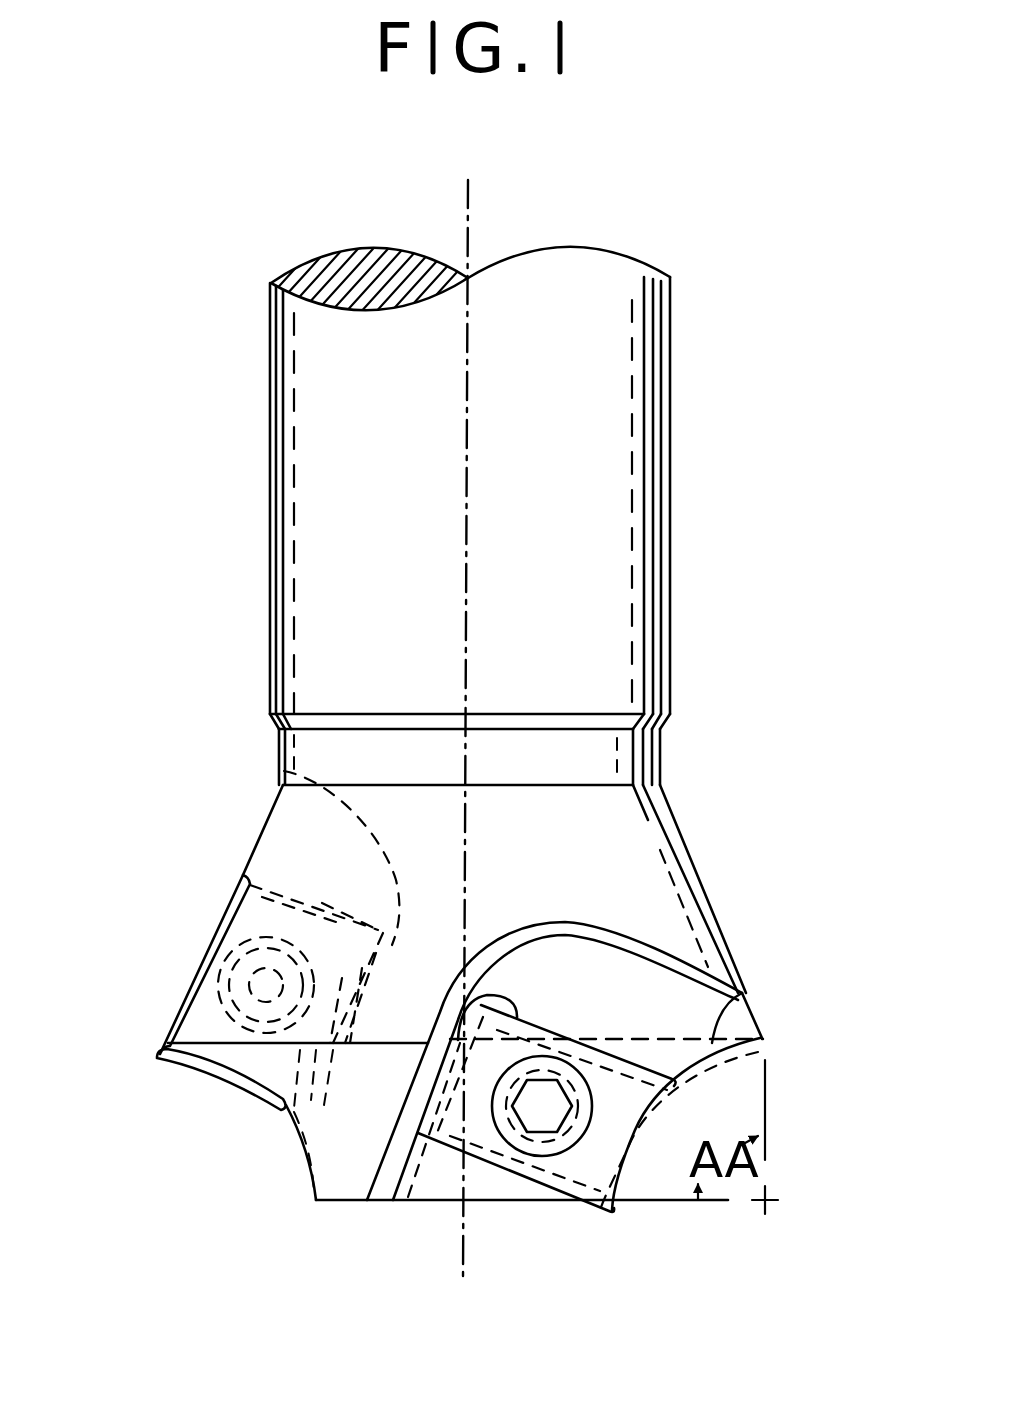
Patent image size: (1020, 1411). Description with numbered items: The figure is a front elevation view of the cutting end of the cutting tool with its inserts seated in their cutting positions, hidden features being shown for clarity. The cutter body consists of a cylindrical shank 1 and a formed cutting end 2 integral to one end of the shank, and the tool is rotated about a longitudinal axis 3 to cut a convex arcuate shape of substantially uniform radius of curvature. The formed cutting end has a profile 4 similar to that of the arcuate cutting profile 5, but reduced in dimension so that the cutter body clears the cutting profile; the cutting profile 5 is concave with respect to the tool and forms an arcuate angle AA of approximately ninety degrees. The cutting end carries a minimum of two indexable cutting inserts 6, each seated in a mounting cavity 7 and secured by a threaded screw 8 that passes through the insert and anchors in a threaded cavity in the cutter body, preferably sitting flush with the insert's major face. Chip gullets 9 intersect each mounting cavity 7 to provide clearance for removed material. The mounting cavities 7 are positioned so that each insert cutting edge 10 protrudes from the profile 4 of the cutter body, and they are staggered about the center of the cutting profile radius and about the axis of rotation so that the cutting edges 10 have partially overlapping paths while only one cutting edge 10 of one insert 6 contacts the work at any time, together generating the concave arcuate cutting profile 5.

The cylindrical shank 1 is at (565, 488).
The formed cutting end 2 is at (465, 992).
The longitudinal axis 3 is at (470, 212).
The profile of the cutter body 4 is at (742, 993).
The arcuate cutting profile 5 is at (310, 1177).
The indexable cutting insert 6 is at (160, 1020).
The mounting cavity 7 is at (300, 895).
The threaded screw 8 is at (227, 942).
The chip gullet 9 is at (513, 985).
The insert cutting edge 10 is at (241, 1082).